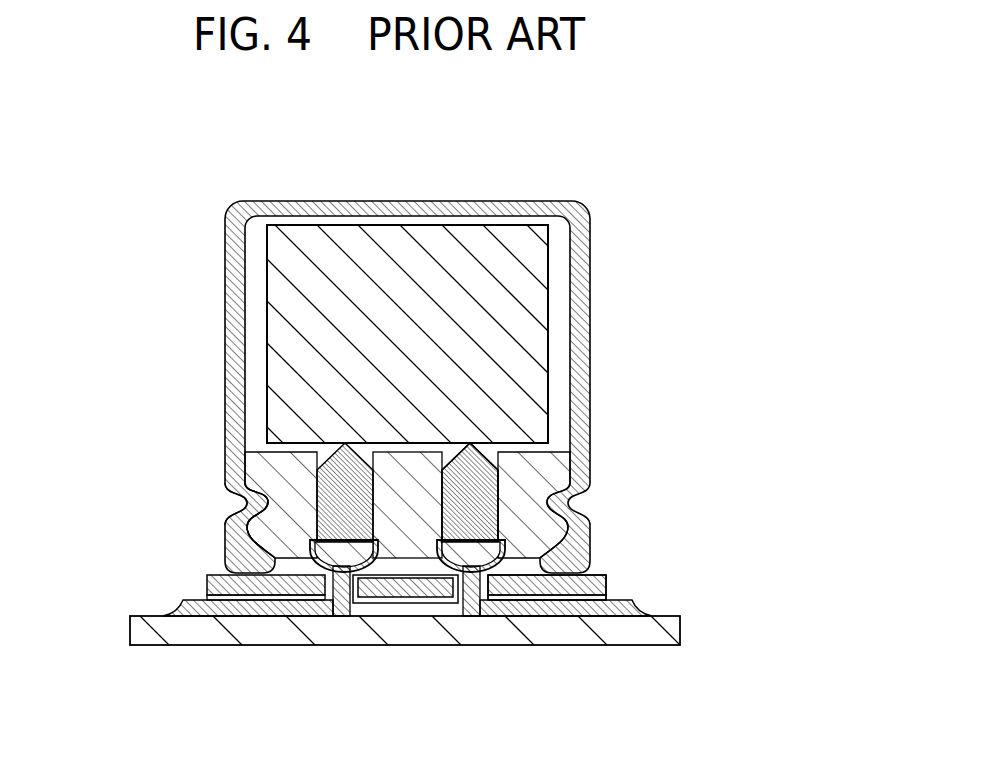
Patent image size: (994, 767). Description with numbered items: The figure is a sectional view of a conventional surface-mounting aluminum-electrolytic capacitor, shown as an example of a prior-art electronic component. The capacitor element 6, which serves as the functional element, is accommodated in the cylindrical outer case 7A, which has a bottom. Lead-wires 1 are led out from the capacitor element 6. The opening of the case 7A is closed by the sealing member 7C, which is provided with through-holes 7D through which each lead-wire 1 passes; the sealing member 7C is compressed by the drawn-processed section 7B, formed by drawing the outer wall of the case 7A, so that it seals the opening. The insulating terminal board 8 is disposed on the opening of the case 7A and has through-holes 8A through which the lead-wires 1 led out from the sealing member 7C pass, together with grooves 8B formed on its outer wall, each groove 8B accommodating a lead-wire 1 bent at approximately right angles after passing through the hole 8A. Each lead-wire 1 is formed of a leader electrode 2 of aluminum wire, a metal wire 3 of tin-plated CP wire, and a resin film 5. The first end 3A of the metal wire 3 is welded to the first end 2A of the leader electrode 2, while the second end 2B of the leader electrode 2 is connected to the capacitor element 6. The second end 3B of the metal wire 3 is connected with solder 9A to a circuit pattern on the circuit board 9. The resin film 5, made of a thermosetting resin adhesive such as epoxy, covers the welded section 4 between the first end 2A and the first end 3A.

The lead-wire 1 is at (807, 338).
The leader electrode 2 is at (755, 307).
The first end of leader electrode 2A is at (480, 537).
The second end of leader electrode 2B is at (480, 465).
The metal wire 3 is at (755, 508).
The first end of metal wire 3A is at (487, 580).
The second end of metal wire 3B is at (632, 604).
The welded section 4 is at (500, 548).
The resin film 5 is at (503, 567).
The capacitor element 6 is at (508, 277).
The outer case 7A is at (237, 250).
The drawn-processed section 7B is at (237, 508).
The sealing member 7C is at (287, 485).
The through-hole 7D is at (317, 445).
The insulating terminal board 8 is at (403, 604).
The through-hole 8A is at (463, 604).
The groove 8B is at (212, 597).
The circuit board 9 is at (238, 632).
The solder 9A is at (177, 612).